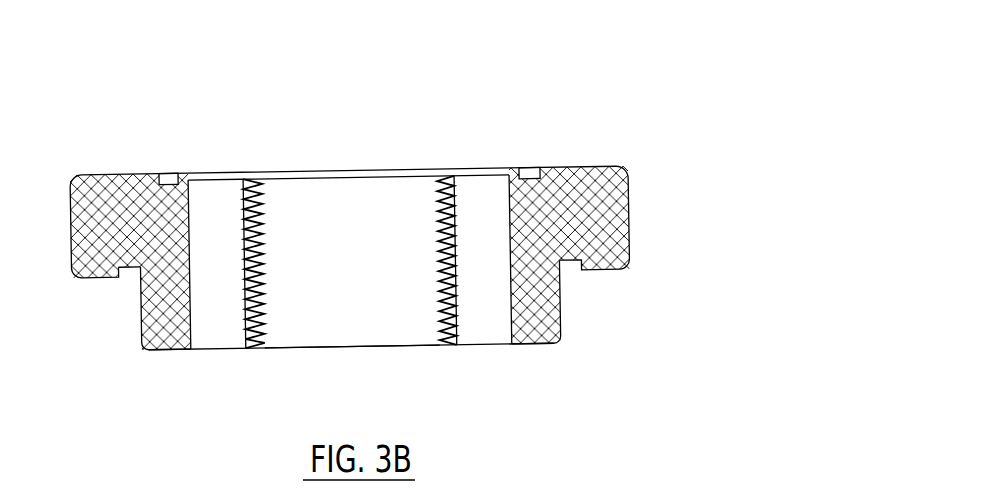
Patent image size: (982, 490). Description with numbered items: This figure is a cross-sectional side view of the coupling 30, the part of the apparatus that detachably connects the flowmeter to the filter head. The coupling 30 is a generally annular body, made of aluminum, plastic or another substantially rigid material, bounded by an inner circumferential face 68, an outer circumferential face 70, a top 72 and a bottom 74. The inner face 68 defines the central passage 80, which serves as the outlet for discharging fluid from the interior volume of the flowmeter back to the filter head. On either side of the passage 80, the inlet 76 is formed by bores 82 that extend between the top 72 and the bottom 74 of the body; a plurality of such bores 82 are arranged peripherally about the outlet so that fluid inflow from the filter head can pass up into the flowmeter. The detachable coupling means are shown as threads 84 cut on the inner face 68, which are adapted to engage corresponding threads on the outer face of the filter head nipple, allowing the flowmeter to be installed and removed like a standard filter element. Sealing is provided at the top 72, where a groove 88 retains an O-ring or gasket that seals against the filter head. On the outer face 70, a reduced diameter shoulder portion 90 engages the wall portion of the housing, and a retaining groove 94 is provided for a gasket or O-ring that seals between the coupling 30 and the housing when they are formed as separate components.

The coupling 30 is at (733, 92).
The inner circumferential face 68 is at (262, 273).
The outer circumferential face 70 is at (630, 218).
The top 72 is at (577, 167).
The bottom 74 is at (170, 352).
The inlet 76 is at (217, 171).
The passage 80 is at (371, 292).
The bore 82 is at (243, 275).
The threads 84 is at (440, 228).
The groove 88 is at (162, 168).
The reduced diameter shoulder portion 90 is at (560, 315).
The retaining groove 94 is at (128, 280).